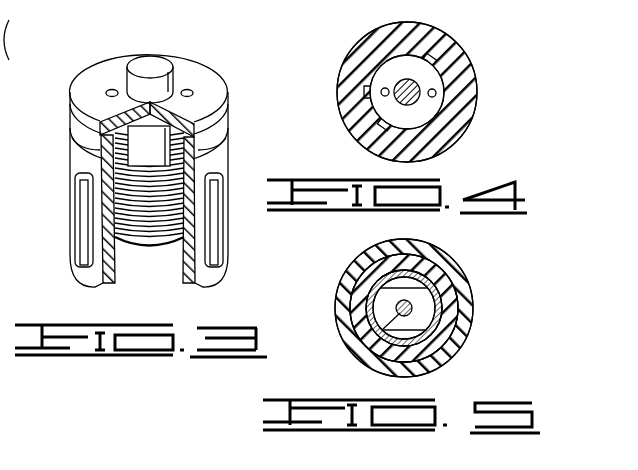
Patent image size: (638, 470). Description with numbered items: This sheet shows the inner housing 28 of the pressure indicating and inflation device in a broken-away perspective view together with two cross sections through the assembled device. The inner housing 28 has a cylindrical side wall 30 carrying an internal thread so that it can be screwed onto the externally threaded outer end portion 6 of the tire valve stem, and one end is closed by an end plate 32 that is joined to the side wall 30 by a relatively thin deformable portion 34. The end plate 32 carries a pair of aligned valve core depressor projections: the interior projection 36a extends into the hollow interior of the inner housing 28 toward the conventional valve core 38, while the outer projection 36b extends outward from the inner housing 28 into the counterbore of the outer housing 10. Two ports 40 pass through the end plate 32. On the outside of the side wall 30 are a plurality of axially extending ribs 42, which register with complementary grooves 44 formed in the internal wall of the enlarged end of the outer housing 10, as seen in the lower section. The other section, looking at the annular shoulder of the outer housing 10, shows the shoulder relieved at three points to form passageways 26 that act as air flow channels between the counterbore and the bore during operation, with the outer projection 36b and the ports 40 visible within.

In FIG. 5, the externally threaded outer end portion 6 is at (428, 259).
In FIG. 3, the outer housing 10 is at (149, 202).
In FIG. 4, the outer housing 10 is at (384, 36).
In FIG. 5, the outer housing 10 is at (342, 302).
In FIG. 4, the passageways 26 is at (368, 93).
In FIG. 3, the inner housing 28 is at (153, 153).
In FIG. 5, the inner housing 28 is at (447, 294).
In FIG. 3, the cylindrical side wall 30 is at (195, 252).
In FIG. 5, the cylindrical side wall 30 is at (354, 282).
In FIG. 3, the end plate 32 is at (92, 80).
In FIG. 3, the deformable portion 34 is at (76, 150).
In FIG. 3, the interior valve core depressor projection 36a is at (162, 156).
In FIG. 3, the outer valve core depressor projection 36b is at (152, 60).
In FIG. 4, the outer valve core depressor projection 36b is at (420, 100).
In FIG. 5, the outer valve core depressor projection 36b is at (404, 309).
In FIG. 5, the valve core 38 is at (350, 332).
In FIG. 3, the ports 40 is at (111, 88).
In FIG. 4, the ports 40 is at (383, 88).
In FIG. 3, the axially extending ribs 42 is at (83, 240).
In FIG. 5, the axially extending ribs 42 is at (447, 310).
In FIG. 5, the grooves 44 is at (366, 265).